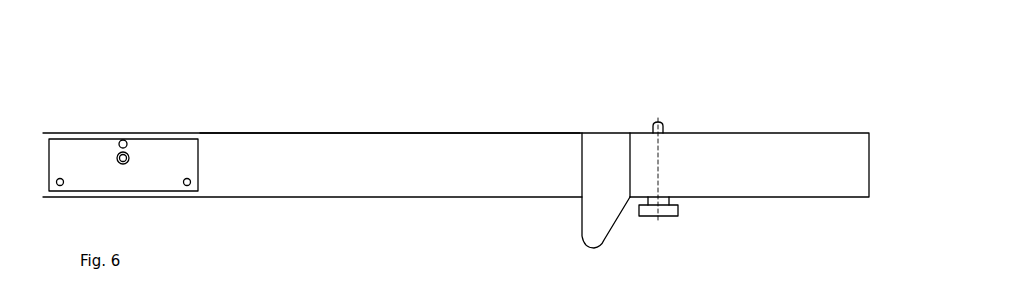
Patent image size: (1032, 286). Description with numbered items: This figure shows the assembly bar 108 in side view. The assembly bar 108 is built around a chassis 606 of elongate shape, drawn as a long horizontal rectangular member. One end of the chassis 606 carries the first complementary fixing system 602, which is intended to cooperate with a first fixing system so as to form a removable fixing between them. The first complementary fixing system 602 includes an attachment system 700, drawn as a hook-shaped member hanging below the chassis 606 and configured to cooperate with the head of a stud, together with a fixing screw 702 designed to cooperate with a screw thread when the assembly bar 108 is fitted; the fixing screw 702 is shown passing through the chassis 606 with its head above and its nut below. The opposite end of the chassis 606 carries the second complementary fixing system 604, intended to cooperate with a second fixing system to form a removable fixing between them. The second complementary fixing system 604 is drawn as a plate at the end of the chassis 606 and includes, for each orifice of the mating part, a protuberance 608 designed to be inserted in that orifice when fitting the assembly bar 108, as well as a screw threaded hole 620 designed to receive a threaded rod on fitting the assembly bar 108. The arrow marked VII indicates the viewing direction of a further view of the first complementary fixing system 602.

The support rail / elongated member 108 is at (363, 103).
The hanger bracket 602 is at (634, 105).
The end mounting plate 604 is at (117, 98).
The rail surface / web 606 is at (316, 155).
The mounting holes 608 is at (118, 143).
The fastener / pivot hole 620 is at (128, 164).
The hook 700 is at (585, 224).
The nut and bolt 702 is at (676, 214).
The section line indicator VII is at (570, 103).